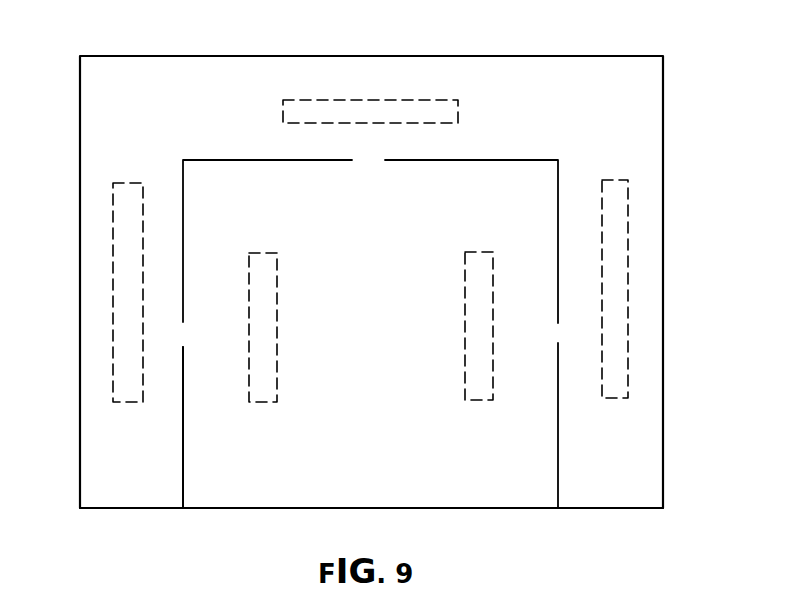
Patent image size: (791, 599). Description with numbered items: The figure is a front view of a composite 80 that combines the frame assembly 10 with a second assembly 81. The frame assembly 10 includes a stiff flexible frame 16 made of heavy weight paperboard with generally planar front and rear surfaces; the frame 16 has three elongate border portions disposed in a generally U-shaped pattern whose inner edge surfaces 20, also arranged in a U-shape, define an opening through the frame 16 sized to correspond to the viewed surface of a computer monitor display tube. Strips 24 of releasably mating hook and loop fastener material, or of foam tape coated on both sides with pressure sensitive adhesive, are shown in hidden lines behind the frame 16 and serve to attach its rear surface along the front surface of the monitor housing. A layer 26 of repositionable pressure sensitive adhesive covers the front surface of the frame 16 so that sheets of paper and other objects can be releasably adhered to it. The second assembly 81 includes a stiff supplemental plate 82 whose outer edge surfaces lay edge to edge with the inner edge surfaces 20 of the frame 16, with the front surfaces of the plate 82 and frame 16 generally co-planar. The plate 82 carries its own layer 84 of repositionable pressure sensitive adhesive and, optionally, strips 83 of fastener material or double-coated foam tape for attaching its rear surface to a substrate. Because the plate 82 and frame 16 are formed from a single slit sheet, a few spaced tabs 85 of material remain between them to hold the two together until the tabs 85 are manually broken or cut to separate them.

The frame assembly 10 is at (664, 126).
The composite 80 is at (668, 48).
The frame 16 is at (538, 62).
The inner edge surfaces 20 is at (558, 195).
The strips 24 is at (429, 100).
The layer of repositionable pressure sensitive adhesive 26 is at (135, 495).
The second assembly 81 is at (525, 509).
The supplemental plate 82 is at (297, 500).
The strips 83 is at (278, 372).
The layer of repositionable pressure sensitive adhesive 84 is at (260, 480).
The tabs 85 is at (370, 160).